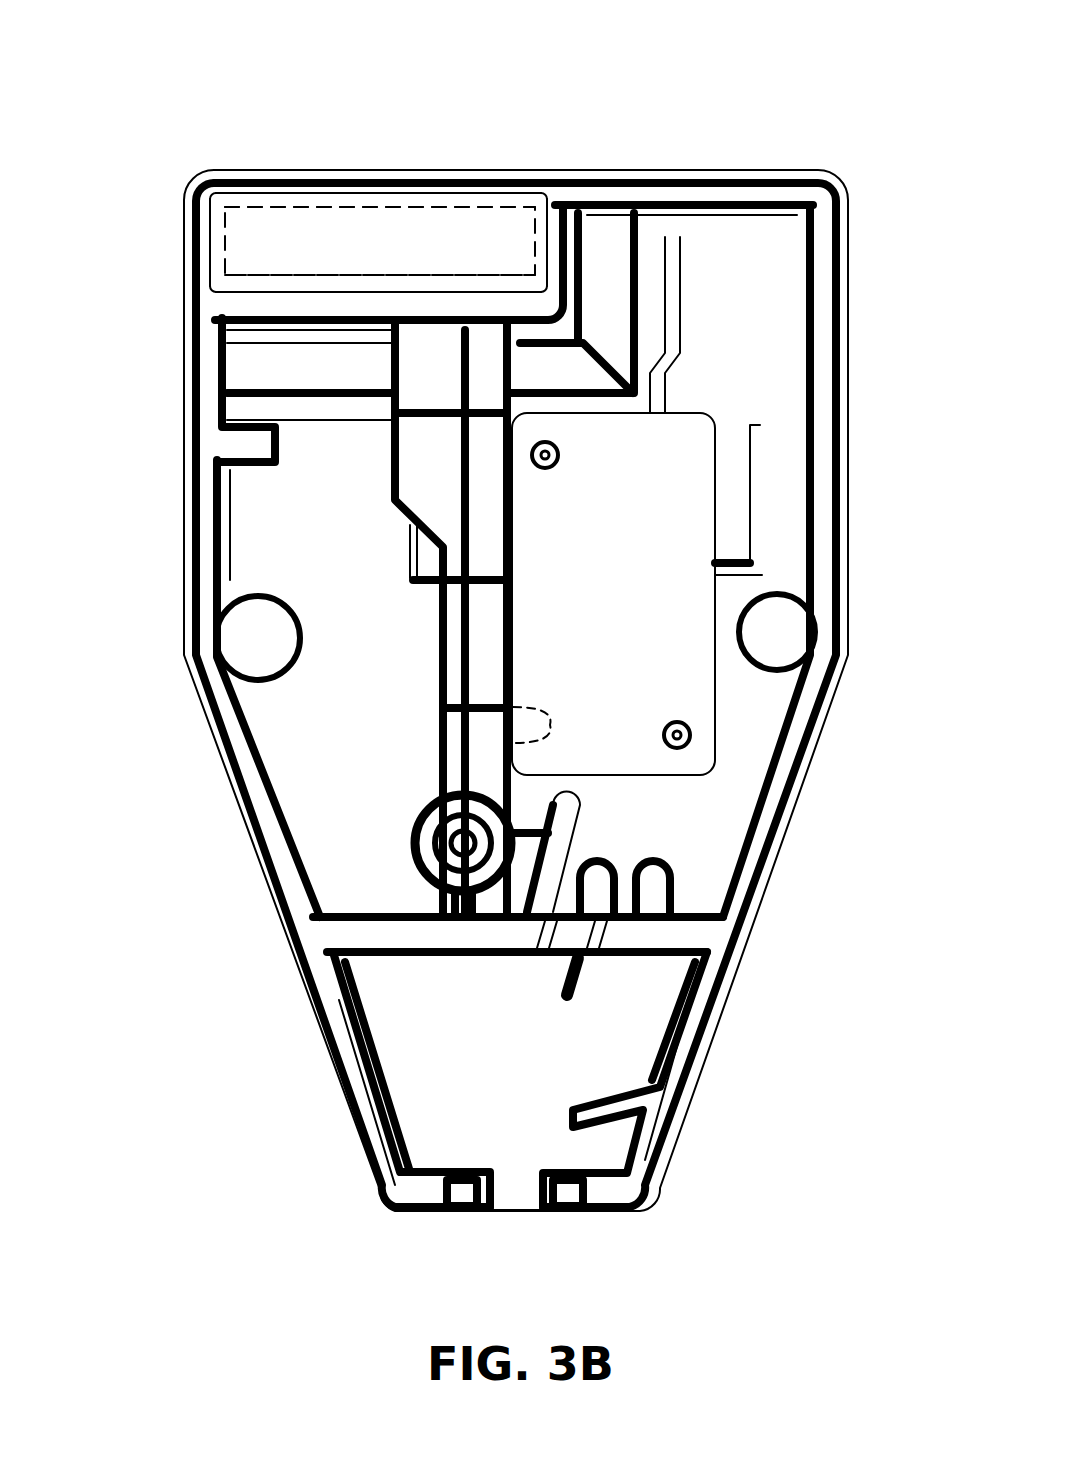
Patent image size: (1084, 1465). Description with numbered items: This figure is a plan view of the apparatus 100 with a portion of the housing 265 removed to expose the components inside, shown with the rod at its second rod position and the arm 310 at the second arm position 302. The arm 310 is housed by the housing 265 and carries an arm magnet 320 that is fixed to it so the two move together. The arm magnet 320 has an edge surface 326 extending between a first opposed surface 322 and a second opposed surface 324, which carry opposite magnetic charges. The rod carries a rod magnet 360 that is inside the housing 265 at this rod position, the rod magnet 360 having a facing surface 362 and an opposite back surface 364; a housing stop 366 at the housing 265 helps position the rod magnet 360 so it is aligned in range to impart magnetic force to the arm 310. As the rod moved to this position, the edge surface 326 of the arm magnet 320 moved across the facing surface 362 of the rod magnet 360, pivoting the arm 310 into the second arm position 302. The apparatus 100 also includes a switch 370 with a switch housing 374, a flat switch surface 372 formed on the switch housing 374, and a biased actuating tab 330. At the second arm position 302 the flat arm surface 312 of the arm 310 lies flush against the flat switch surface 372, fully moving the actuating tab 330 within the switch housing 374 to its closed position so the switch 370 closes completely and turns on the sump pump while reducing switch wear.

The apparatus 100 is at (168, 136).
The housing 265 is at (285, 940).
The second arm position 302 is at (395, 609).
The arm 310 is at (483, 613).
The flat arm surface 312 is at (505, 658).
The arm magnet 320 is at (428, 444).
The first opposed surface 322 is at (503, 465).
The second opposed surface 324 is at (395, 419).
The edge surface 326 is at (455, 333).
The actuating tab 330 is at (545, 725).
The rod magnet 360 is at (320, 248).
The facing surface 362 is at (378, 277).
The back surface 364 is at (410, 205).
The housing stop 366 is at (530, 200).
The switch 370 is at (697, 518).
The flat switch surface 372 is at (507, 622).
The switch housing 374 is at (708, 415).